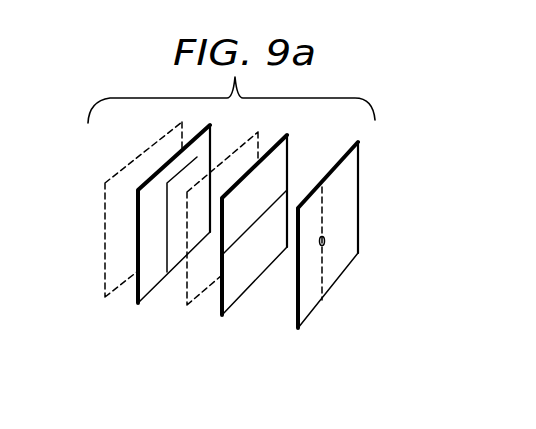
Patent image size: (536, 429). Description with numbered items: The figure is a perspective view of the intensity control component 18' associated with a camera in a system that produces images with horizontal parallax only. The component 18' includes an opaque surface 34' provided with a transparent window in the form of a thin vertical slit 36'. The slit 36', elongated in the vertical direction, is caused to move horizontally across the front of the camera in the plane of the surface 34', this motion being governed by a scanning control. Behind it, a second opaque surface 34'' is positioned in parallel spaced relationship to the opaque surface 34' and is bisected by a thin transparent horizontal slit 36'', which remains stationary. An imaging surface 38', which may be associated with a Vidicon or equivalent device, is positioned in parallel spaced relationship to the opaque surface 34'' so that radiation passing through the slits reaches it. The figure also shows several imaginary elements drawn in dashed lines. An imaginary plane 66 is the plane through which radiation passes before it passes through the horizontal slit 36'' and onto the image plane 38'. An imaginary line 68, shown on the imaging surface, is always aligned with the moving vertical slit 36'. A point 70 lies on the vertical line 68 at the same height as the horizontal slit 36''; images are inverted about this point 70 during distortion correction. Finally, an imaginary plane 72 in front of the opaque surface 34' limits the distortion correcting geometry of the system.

The intensity control component 18' is at (211, 124).
The imaginary plane 72 is at (105, 183).
The opaque surface 34' is at (158, 241).
The thin vertical slit 36' is at (211, 190).
The imaginary plane 66 is at (187, 281).
The second opaque surface 34'' is at (254, 247).
The thin transparent horizontal slit 36'' is at (282, 184).
The imaging surface 38' is at (358, 235).
The imaginary line 68 is at (316, 306).
The point 70 is at (325, 243).